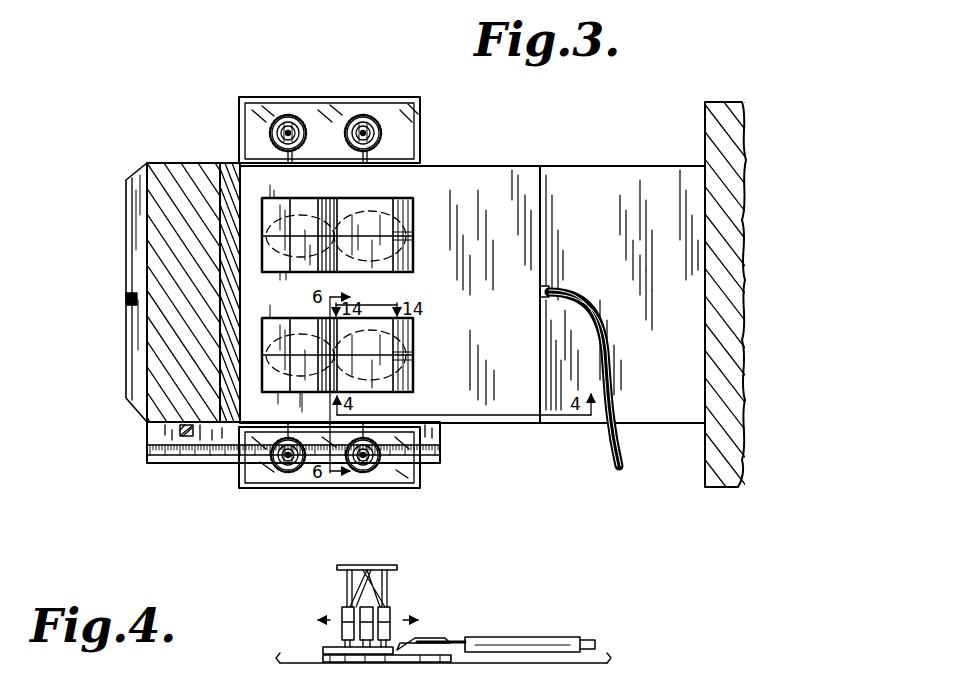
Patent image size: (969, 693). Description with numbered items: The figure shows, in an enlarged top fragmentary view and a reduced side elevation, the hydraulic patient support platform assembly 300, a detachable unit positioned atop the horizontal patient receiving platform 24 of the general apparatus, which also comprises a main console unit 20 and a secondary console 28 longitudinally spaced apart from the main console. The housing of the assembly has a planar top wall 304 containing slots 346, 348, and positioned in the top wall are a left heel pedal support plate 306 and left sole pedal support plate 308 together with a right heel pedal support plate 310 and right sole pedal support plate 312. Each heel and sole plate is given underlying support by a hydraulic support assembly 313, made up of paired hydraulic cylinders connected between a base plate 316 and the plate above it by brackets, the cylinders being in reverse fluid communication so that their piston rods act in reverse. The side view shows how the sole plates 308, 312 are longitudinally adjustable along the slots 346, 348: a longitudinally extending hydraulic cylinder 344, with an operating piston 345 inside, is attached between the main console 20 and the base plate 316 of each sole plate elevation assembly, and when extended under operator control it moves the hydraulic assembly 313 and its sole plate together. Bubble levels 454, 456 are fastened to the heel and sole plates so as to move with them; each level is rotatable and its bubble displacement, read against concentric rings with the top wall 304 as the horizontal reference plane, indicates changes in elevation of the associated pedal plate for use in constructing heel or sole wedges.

In FIG. 3, the main console unit 20 is at (706, 470).
In FIG. 3, the horizontal patient receiving platform 24 is at (660, 424).
In FIG. 3, the secondary console 28 is at (185, 340).
In FIG. 3, the hydraulic patient support platform assembly 300 is at (542, 146).
In FIG. 3, the planar top wall 304 is at (466, 170).
In FIG. 3, the left heel pedal support plate 306 is at (262, 222).
In FIG. 3, the left sole pedal support plate 308 is at (372, 204).
In FIG. 3, the right heel pedal support plate 310 is at (270, 392).
In FIG. 3, the right sole pedal support plate 312 is at (413, 372).
In FIG. 4, the right sole pedal support plate 312 is at (395, 564).
In FIG. 4, the hydraulic support assembly 313 is at (408, 587).
In FIG. 4, the base plate 316 is at (323, 650).
In FIG. 4, the longitudinally extending hydraulic cylinder 344 is at (540, 637).
In FIG. 4, the operating piston 345 is at (425, 637).
In FIG. 3, the slot 346 is at (332, 227).
In FIG. 3, the slot 348 is at (266, 299).
In FIG. 3, the bubble level 454 is at (300, 118).
In FIG. 3, the bubble level 456 is at (365, 118).